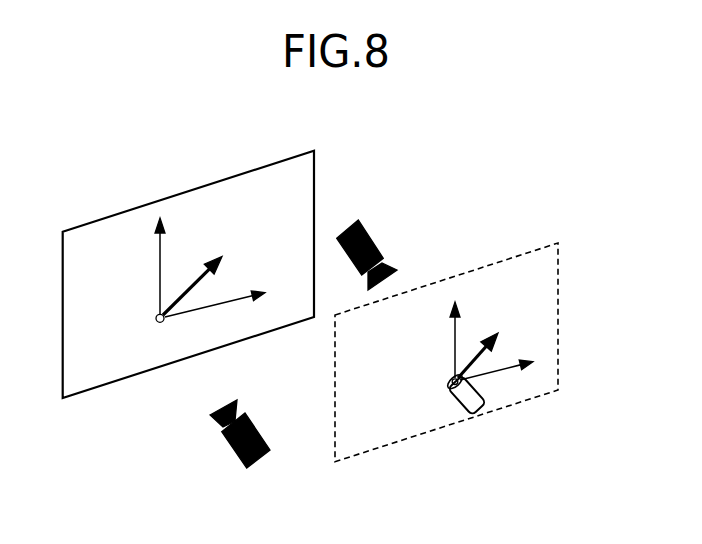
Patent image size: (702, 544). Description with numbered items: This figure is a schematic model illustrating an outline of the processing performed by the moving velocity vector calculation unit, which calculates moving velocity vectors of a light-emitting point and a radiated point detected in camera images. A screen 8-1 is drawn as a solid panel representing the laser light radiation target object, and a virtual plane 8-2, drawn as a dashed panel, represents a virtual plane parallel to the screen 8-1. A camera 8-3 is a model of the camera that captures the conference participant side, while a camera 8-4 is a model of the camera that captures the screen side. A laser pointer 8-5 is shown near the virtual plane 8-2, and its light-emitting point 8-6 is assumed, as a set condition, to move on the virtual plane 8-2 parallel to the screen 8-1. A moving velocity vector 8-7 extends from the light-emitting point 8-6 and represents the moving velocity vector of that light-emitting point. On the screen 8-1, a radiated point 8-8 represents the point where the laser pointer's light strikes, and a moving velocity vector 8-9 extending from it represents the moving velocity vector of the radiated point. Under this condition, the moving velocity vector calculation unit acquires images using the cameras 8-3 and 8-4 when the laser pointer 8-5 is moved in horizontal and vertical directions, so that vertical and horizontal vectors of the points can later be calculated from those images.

The screen 8-1 is at (233, 175).
The virtual plane 8-2 is at (508, 260).
The camera 8-3 is at (370, 237).
The camera 8-4 is at (255, 427).
The laser pointer 8-5 is at (487, 394).
The light-emitting point 8-6 is at (452, 378).
The moving velocity vector 8-7 is at (493, 331).
The radiated point 8-8 is at (158, 322).
The moving velocity vector 8-9 is at (211, 258).